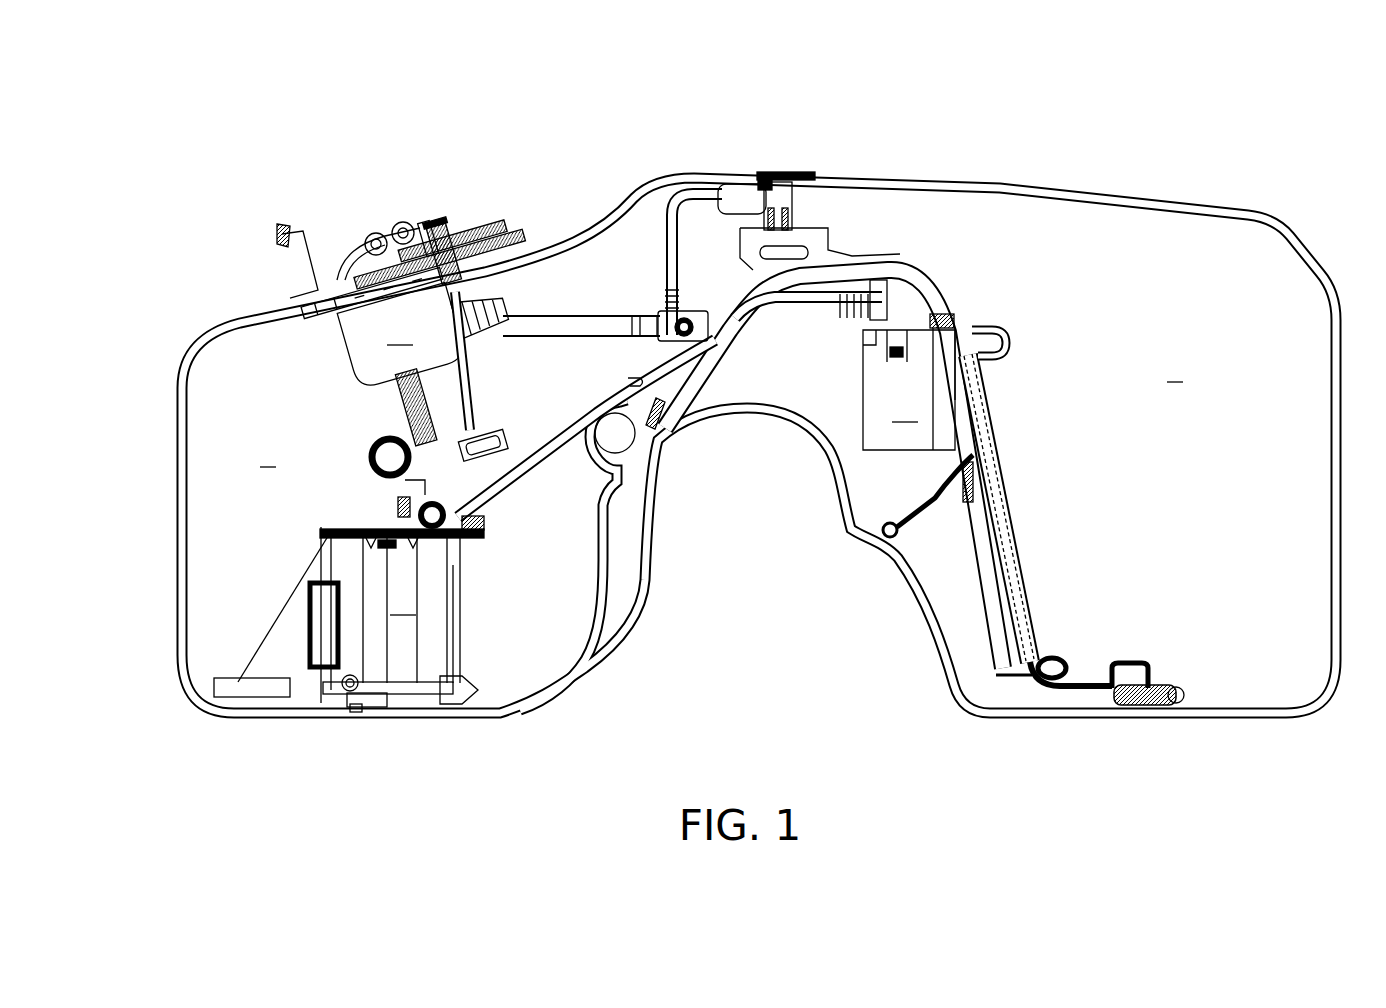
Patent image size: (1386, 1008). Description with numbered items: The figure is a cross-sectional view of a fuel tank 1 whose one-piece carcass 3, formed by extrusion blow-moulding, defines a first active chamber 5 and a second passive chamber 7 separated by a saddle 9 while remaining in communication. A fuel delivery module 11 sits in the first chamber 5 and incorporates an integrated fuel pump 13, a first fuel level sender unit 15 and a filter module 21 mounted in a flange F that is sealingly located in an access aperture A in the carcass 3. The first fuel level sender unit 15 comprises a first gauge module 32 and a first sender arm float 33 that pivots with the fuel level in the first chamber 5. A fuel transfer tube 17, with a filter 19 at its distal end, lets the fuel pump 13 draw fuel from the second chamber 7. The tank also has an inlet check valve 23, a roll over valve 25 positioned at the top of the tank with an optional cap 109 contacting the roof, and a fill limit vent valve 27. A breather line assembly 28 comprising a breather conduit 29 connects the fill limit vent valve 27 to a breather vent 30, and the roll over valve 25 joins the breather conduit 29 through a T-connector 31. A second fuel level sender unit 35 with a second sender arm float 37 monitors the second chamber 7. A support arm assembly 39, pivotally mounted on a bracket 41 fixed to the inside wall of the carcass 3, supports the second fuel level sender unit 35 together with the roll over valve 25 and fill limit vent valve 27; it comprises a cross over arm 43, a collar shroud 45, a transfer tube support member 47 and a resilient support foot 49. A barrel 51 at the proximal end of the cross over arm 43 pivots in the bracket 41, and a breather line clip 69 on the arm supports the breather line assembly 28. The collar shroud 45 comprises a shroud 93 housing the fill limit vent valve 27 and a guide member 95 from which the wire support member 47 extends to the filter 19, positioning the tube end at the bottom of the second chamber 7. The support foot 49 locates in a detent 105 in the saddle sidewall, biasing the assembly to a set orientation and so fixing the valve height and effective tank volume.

The fuel tank 1 is at (1284, 189).
The carcass 3 is at (1308, 243).
The first chamber 5 is at (268, 455).
The second chamber 7 is at (1175, 370).
The saddle 9 is at (800, 423).
The fuel delivery module 11 is at (500, 640).
The fuel pump 13 is at (361, 619).
The first fuel level sender unit 15 is at (262, 614).
The fuel transfer tube 17 is at (933, 293).
The filter 19 is at (1163, 706).
The filter module 21 is at (433, 345).
The inlet check valve 23 is at (372, 443).
The roll over valve 25 is at (803, 187).
The fill limit vent valve 27 is at (885, 351).
The breather line assembly 28 is at (560, 283).
The breather conduit 29 is at (617, 322).
The breather vent 30 is at (452, 245).
The T-connector 31 is at (668, 297).
The first gauge module 32 is at (322, 597).
The first sender arm float 33 is at (246, 687).
The second fuel level sender unit 35 is at (887, 473).
The second sender arm float 37 is at (970, 557).
The support arm assembly 39 is at (883, 204).
The bracket 41 is at (650, 433).
The cross over arm 43 is at (713, 363).
The collar shroud 45 is at (935, 352).
The transfer tube support member 47 is at (1137, 660).
The resilient support foot 49 is at (913, 527).
The barrel 51 is at (618, 440).
The breather line clip 69 is at (667, 348).
The shroud 93 is at (909, 390).
The guide member 95 is at (993, 452).
The detent 105 is at (877, 523).
The cap 109 is at (788, 174).
The access aperture A is at (292, 293).
The flange F is at (365, 228).